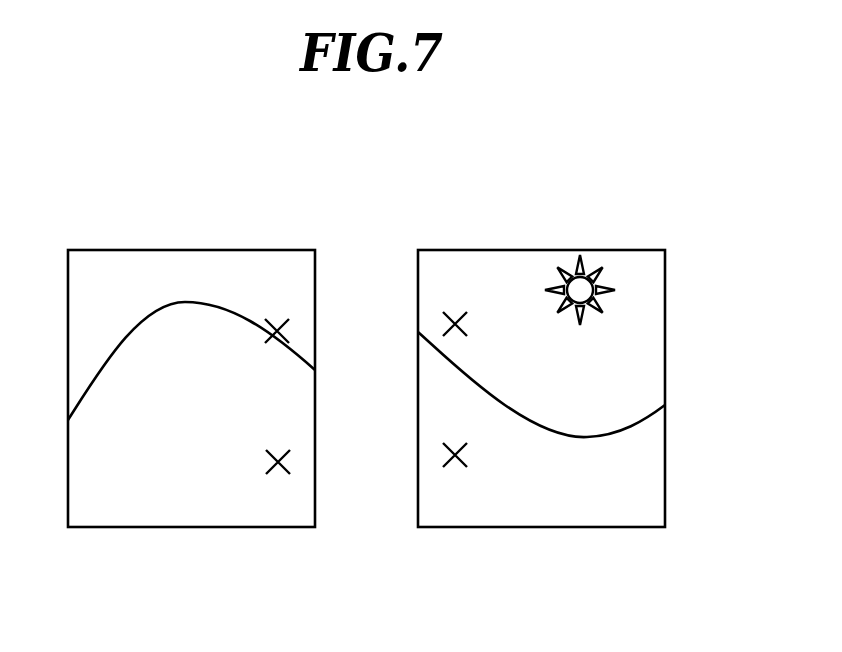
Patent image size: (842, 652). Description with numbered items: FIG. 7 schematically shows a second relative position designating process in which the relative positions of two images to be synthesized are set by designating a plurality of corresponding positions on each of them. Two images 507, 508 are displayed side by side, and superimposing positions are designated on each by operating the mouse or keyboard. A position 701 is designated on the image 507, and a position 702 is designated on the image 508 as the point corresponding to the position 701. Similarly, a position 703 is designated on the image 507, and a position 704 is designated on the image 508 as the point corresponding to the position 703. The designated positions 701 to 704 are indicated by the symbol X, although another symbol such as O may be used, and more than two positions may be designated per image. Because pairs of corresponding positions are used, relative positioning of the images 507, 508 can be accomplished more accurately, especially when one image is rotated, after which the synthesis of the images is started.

The image 507 is at (292, 250).
The image 508 is at (625, 250).
The position 701 is at (290, 322).
The position 702 is at (450, 315).
The position 703 is at (285, 473).
The position 704 is at (447, 460).